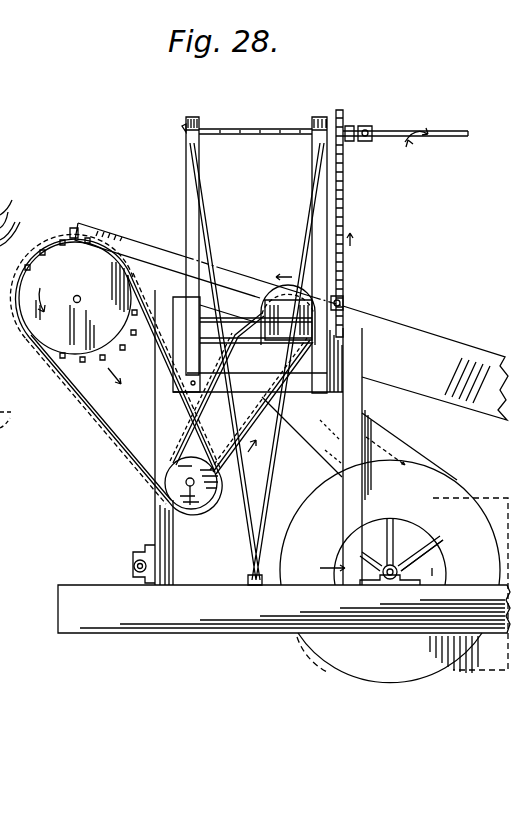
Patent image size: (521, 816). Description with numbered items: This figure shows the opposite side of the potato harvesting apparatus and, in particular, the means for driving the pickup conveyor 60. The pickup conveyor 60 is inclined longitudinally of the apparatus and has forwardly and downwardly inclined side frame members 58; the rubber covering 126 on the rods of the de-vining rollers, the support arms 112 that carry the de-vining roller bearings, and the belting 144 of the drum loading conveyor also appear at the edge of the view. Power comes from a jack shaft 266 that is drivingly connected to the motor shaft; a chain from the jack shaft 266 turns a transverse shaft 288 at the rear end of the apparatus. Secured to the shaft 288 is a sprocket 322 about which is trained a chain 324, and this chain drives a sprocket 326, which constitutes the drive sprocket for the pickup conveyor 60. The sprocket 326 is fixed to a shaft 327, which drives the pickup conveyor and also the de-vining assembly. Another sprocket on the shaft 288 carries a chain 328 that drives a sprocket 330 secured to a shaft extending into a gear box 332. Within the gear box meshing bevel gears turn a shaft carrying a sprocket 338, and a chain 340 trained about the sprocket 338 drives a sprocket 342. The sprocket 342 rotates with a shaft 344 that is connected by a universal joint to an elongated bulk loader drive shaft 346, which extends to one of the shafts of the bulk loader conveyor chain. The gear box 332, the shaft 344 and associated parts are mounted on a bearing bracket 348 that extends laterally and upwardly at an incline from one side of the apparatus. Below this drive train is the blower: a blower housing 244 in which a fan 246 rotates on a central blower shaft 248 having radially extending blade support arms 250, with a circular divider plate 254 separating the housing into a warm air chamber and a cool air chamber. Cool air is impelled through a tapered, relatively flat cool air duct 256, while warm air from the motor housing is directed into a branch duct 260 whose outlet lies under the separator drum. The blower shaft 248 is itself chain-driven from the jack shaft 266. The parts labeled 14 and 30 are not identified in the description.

The frame 14 is at (11, 194).
The base 30 is at (198, 644).
The side frame members 58 is at (130, 246).
The pick-up conveyor 60 is at (450, 331).
The support arms 112 is at (16, 209).
The rubber covering 126 is at (20, 240).
The belting 144 is at (24, 414).
The blower housing 244 is at (457, 490).
The fan 246 is at (395, 525).
The blower shaft 248 is at (390, 579).
The blade support arms 250 is at (427, 528).
The divider plate 254 is at (446, 575).
The cool air duct 256 is at (382, 438).
The branch duct 260 is at (463, 672).
The jack shaft 266 is at (133, 565).
The shaft 288 is at (191, 493).
The sprocket 322 is at (166, 488).
The chain 324 is at (98, 421).
The drive sprocket 326 is at (52, 339).
The shaft 327 is at (79, 296).
The chain 328 is at (190, 428).
The sprocket 330 is at (294, 274).
The gear box 332 is at (266, 281).
The sprocket 338 is at (344, 303).
The chain 340 is at (345, 176).
The sprocket 342 is at (334, 125).
The shaft 344 is at (249, 128).
The bulk loader drive shaft 346 is at (450, 128).
The bearing bracket 348 is at (187, 118).